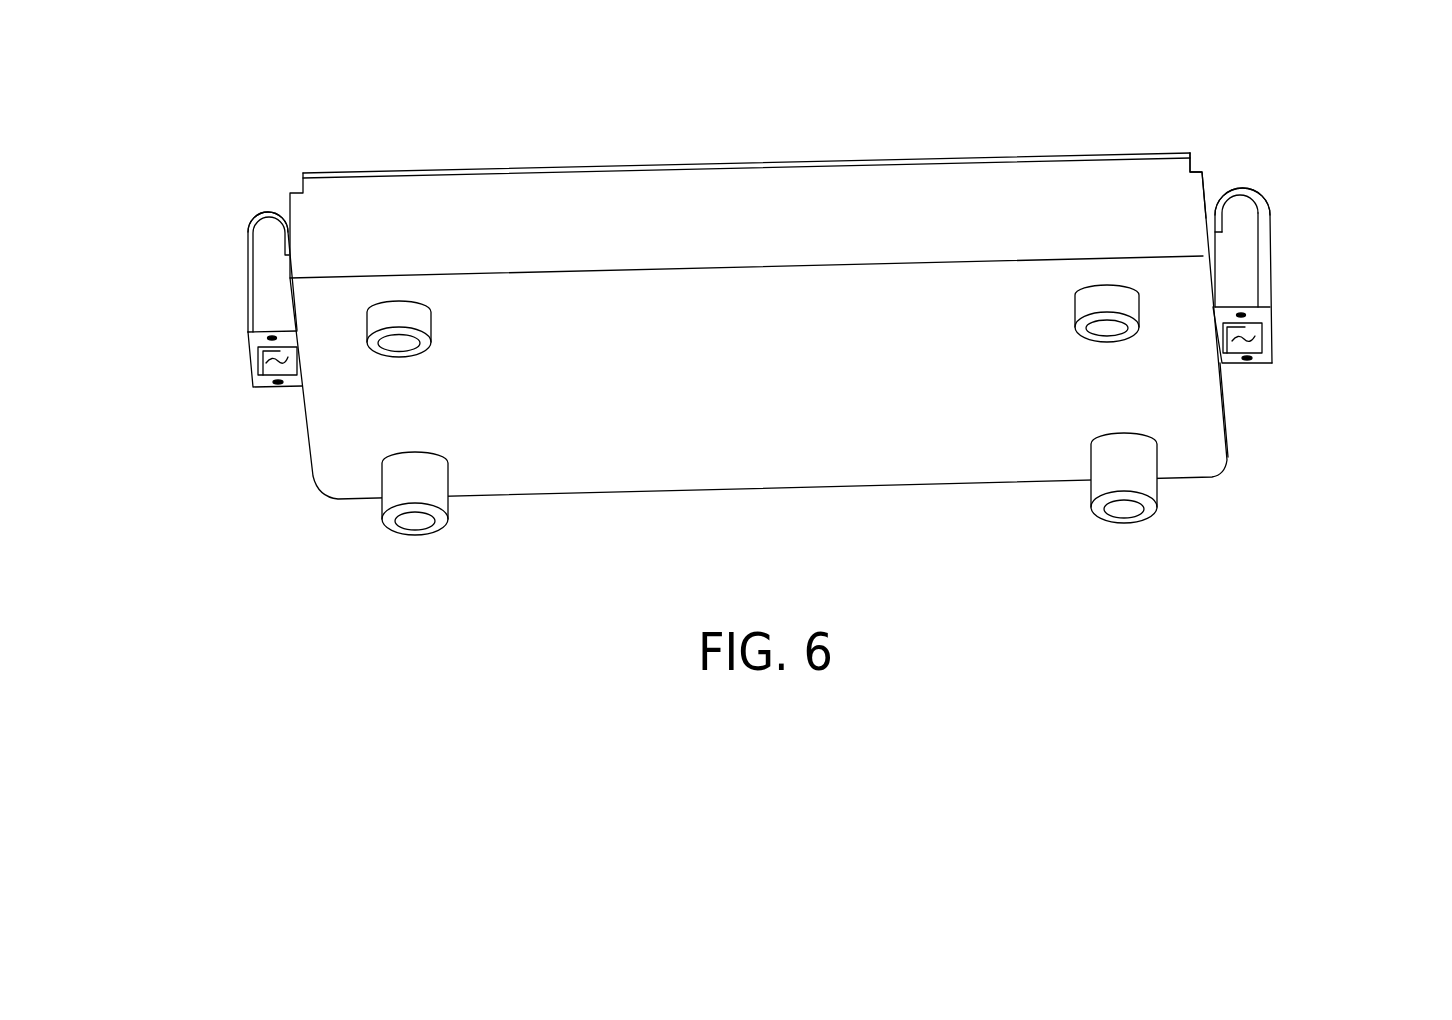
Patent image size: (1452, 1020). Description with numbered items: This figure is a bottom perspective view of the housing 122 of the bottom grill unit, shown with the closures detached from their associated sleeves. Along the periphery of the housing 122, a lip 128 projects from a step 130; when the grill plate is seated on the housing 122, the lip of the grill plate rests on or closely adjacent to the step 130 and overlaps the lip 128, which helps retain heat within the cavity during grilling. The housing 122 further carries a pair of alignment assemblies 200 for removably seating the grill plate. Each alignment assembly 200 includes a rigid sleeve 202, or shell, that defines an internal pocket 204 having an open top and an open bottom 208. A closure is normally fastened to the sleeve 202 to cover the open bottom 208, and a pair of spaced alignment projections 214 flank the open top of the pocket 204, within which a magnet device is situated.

The housing 122 is at (1213, 474).
The lip 128 is at (1195, 160).
The step 130 is at (1203, 172).
The alignment assembly 200 is at (247, 281).
The rigid sleeve 202 is at (268, 265).
The internal pocket 204 is at (258, 377).
The open bottom 208 is at (294, 390).
The alignment projections 214 is at (265, 232).